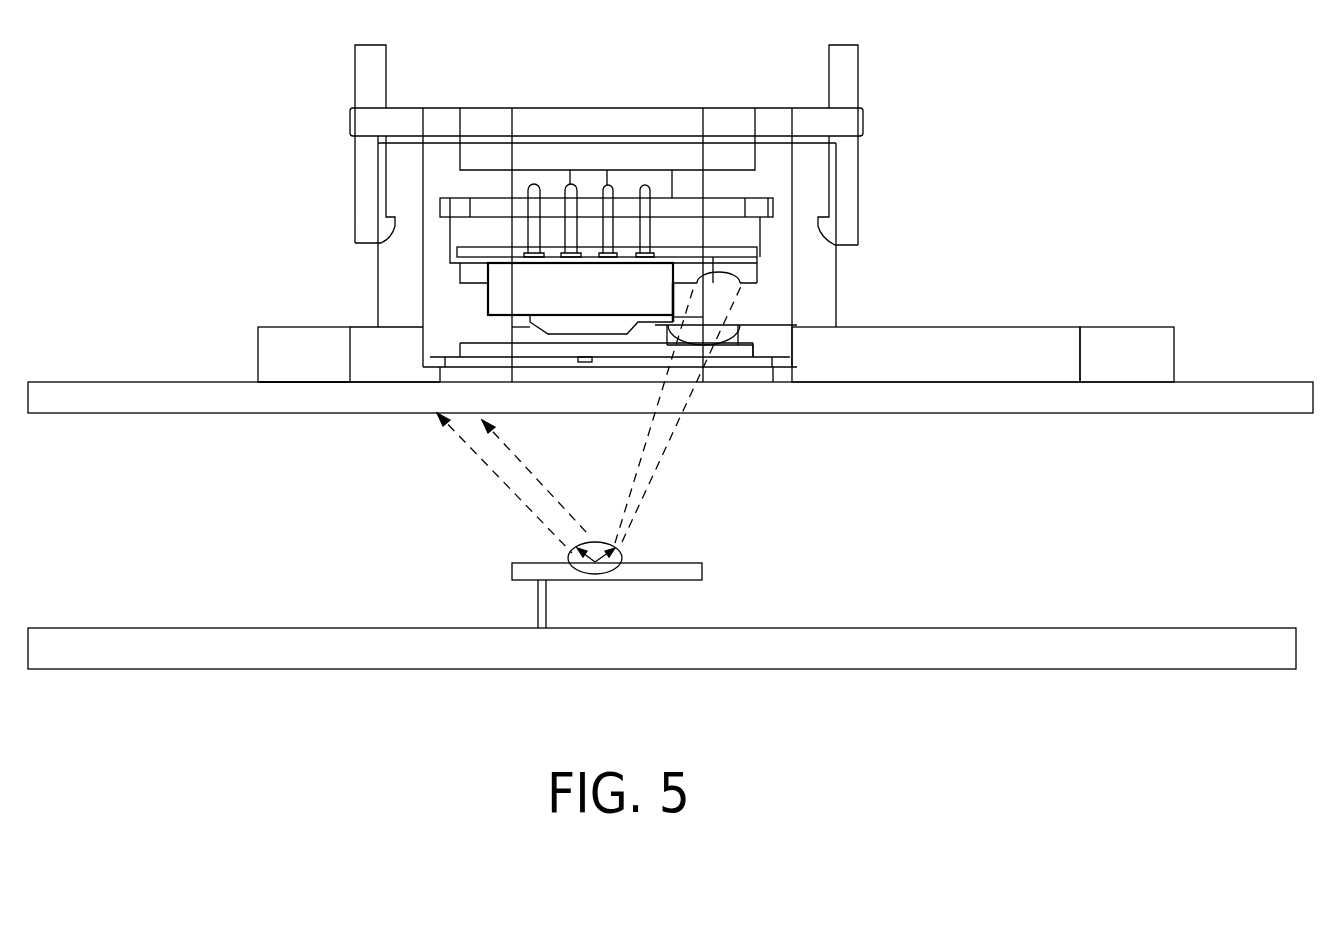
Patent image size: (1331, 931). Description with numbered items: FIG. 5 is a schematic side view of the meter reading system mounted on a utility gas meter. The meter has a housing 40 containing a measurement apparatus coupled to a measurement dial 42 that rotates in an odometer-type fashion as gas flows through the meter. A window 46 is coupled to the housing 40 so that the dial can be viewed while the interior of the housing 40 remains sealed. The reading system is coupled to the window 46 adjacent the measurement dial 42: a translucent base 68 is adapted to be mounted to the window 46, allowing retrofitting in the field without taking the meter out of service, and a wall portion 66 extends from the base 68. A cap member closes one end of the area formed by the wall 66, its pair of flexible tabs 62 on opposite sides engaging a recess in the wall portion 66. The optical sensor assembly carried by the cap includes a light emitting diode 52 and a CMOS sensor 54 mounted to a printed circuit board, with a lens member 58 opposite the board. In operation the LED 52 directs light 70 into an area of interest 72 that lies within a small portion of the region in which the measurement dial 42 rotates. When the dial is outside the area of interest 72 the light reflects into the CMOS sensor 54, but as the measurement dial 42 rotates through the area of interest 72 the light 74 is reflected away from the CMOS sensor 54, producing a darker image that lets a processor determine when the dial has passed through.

The housing 40 is at (1188, 629).
The measurement dial 42 is at (690, 563).
The window 46 is at (1250, 382).
The light emitting diode 52 is at (762, 263).
The CMOS sensor 54 is at (517, 298).
The lens member 58 is at (547, 345).
The tabs 62 is at (355, 73).
The wall portion 66 is at (378, 273).
The translucent base 68 is at (1122, 327).
The light 70 is at (662, 472).
The area of interest 72 is at (573, 550).
The reflected light 74 is at (512, 497).